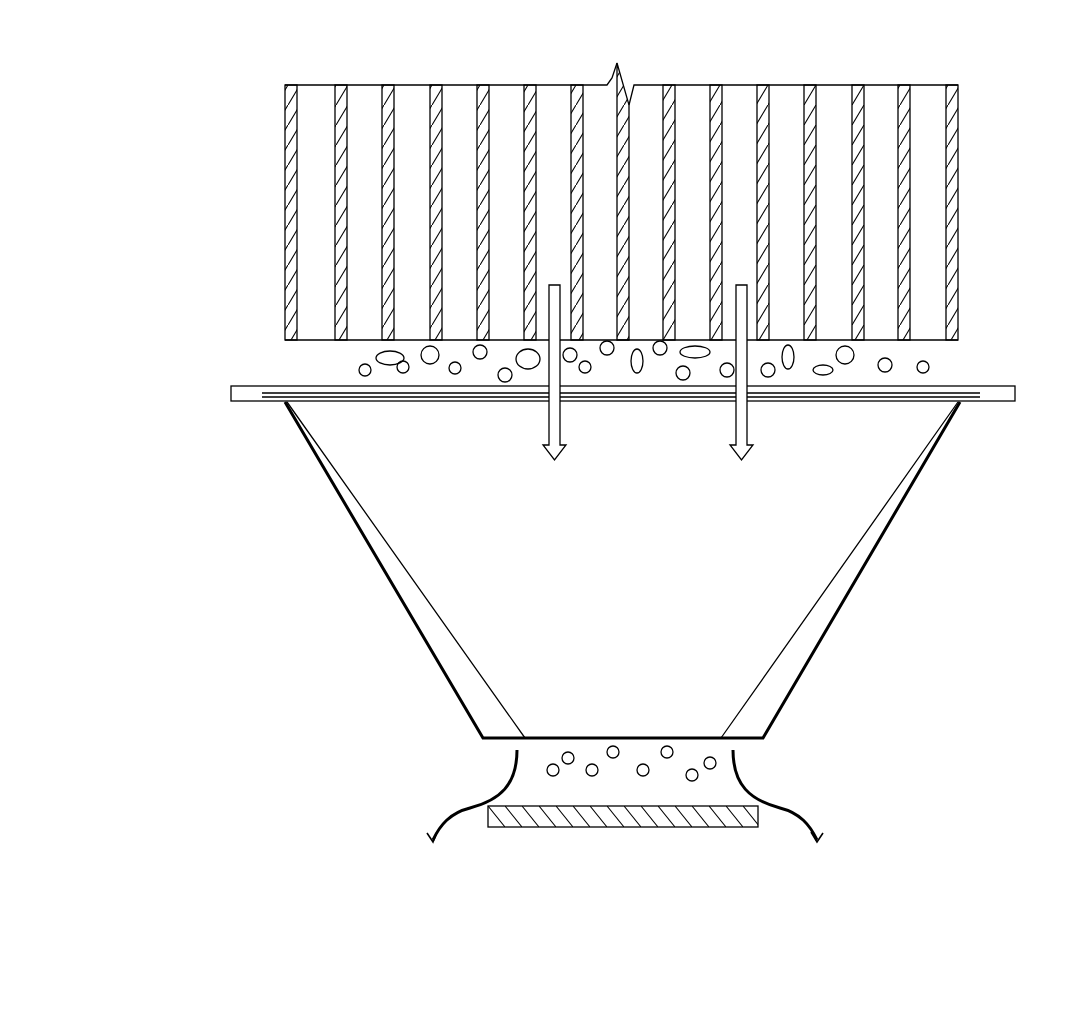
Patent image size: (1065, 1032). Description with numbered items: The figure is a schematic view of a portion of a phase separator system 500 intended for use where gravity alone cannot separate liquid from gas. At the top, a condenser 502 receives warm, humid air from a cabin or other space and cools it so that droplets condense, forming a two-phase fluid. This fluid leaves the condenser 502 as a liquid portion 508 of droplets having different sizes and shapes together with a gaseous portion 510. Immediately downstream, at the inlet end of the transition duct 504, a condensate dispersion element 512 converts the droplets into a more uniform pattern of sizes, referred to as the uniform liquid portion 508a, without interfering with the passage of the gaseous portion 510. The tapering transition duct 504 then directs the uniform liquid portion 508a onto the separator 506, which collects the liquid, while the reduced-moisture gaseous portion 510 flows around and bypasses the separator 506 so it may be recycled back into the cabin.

The phase separator system 500 is at (230, 57).
The condenser 502 is at (935, 202).
The transition duct 504 is at (872, 523).
The separator 506 is at (703, 828).
The liquid portion 508 is at (929, 365).
The uniform liquid portion 508a is at (552, 764).
The gaseous portion 510 is at (747, 426).
The condensate dispersion element 512 is at (231, 392).